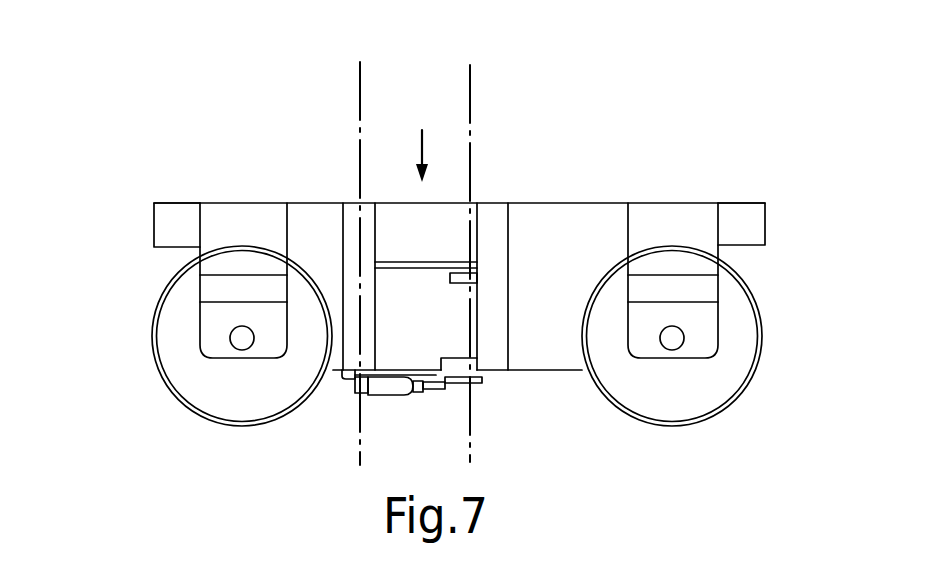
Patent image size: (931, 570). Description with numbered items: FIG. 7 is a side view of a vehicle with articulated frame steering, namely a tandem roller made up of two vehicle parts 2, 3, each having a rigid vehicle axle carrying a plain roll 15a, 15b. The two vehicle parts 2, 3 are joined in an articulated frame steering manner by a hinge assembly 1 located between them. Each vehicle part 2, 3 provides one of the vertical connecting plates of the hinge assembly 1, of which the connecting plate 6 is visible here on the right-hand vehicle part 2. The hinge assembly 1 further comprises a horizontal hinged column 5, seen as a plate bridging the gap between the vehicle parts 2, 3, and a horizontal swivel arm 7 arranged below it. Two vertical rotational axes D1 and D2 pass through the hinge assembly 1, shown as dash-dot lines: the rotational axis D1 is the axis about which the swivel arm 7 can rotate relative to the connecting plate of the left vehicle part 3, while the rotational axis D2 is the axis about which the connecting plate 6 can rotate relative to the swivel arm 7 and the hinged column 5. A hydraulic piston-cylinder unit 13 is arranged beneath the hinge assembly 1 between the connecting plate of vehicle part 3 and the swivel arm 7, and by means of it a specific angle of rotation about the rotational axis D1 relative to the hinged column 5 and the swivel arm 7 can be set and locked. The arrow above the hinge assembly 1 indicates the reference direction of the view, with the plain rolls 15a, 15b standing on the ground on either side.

The hinge assembly 1 is at (421, 127).
The vehicle part 2 is at (560, 228).
The vehicle part 3 is at (187, 215).
The hinged column 5 is at (408, 267).
The connecting plate 6 is at (488, 313).
The swivel arm 7 is at (463, 385).
The hydraulic piston-cylinder unit 13 is at (383, 385).
The plain roll 15a is at (760, 362).
The plain roll 15b is at (155, 345).
The rotational axis D1 is at (363, 90).
The rotational axis D2 is at (475, 96).